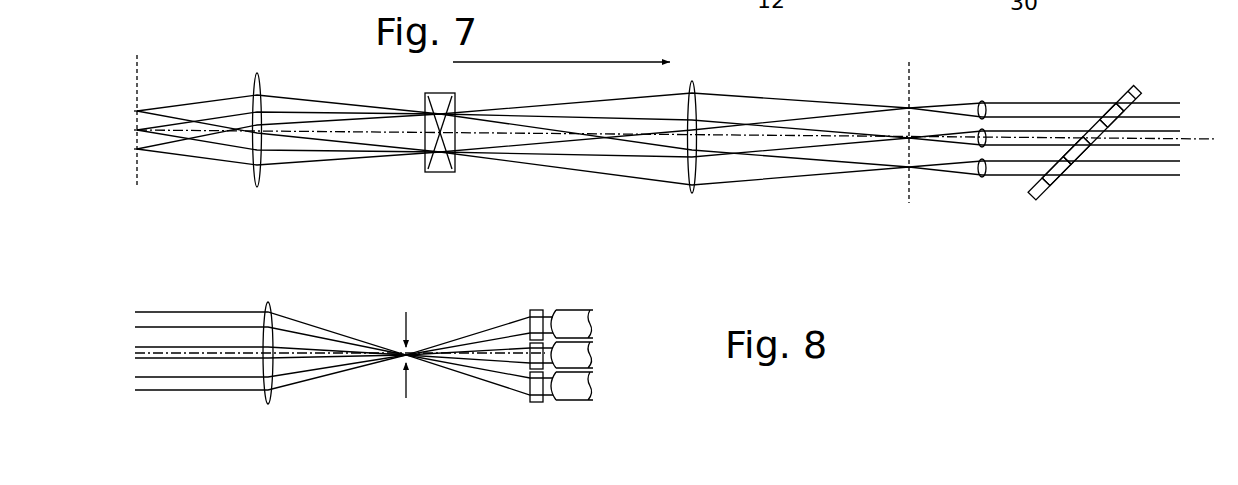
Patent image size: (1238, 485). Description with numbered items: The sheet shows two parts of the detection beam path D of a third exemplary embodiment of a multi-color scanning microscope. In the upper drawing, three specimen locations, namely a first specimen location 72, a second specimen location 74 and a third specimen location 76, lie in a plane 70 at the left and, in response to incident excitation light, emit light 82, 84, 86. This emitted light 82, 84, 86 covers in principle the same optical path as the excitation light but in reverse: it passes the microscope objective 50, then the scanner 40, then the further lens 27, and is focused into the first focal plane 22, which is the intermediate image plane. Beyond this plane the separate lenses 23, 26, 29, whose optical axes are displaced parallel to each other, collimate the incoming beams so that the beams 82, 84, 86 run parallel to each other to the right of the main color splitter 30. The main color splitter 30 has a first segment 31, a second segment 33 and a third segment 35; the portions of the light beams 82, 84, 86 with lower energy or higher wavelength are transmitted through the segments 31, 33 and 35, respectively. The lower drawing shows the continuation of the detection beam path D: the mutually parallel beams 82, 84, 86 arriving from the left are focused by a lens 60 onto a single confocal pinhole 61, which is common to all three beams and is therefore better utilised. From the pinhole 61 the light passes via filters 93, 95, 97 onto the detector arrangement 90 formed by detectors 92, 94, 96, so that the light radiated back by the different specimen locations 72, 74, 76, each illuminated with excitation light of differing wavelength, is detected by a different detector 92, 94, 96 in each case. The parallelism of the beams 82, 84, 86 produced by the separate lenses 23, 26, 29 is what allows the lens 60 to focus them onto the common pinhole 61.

In FIG. 7, the detection beam path D is at (553, 62).
In FIG. 7, the object plane 70 is at (140, 54).
In FIG. 7, the first specimen location 72 is at (136, 111).
In FIG. 7, the second specimen location 74 is at (136, 130).
In FIG. 7, the third specimen location 76 is at (136, 150).
In FIG. 7, the light emitted by first specimen location 82 is at (222, 100).
In FIG. 8, the light emitted by first specimen location 82 is at (170, 383).
In FIG. 7, the light emitted by second specimen location 84 is at (197, 135).
In FIG. 8, the light emitted by second specimen location 84 is at (173, 353).
In FIG. 7, the light emitted by third specimen location 86 is at (232, 160).
In FIG. 8, the light emitted by third specimen location 86 is at (185, 320).
In FIG. 7, the microscope objective 50 is at (259, 107).
In FIG. 7, the scanner 40 is at (446, 100).
In FIG. 7, the further lens 27 is at (695, 105).
In FIG. 7, the first focal plane 22 is at (907, 198).
In FIG. 7, the lens 29 is at (980, 103).
In FIG. 7, the lens 26 is at (985, 133).
In FIG. 7, the lens 23 is at (981, 176).
In FIG. 7, the main color splitter 30 is at (1133, 90).
In FIG. 7, the first segment 31 is at (1061, 170).
In FIG. 7, the second segment 33 is at (1087, 145).
In FIG. 7, the third segment 35 is at (1117, 110).
In FIG. 8, the lens 60 is at (270, 340).
In FIG. 8, the confocal pinhole 61 is at (408, 322).
In FIG. 8, the fiber coupling array 90 is at (579, 324).
In FIG. 8, the filter 93 is at (538, 315).
In FIG. 8, the filter 95 is at (533, 347).
In FIG. 8, the filter 97 is at (535, 387).
In FIG. 8, the detector 92 is at (567, 317).
In FIG. 8, the detector 94 is at (575, 360).
In FIG. 8, the detector 96 is at (572, 392).